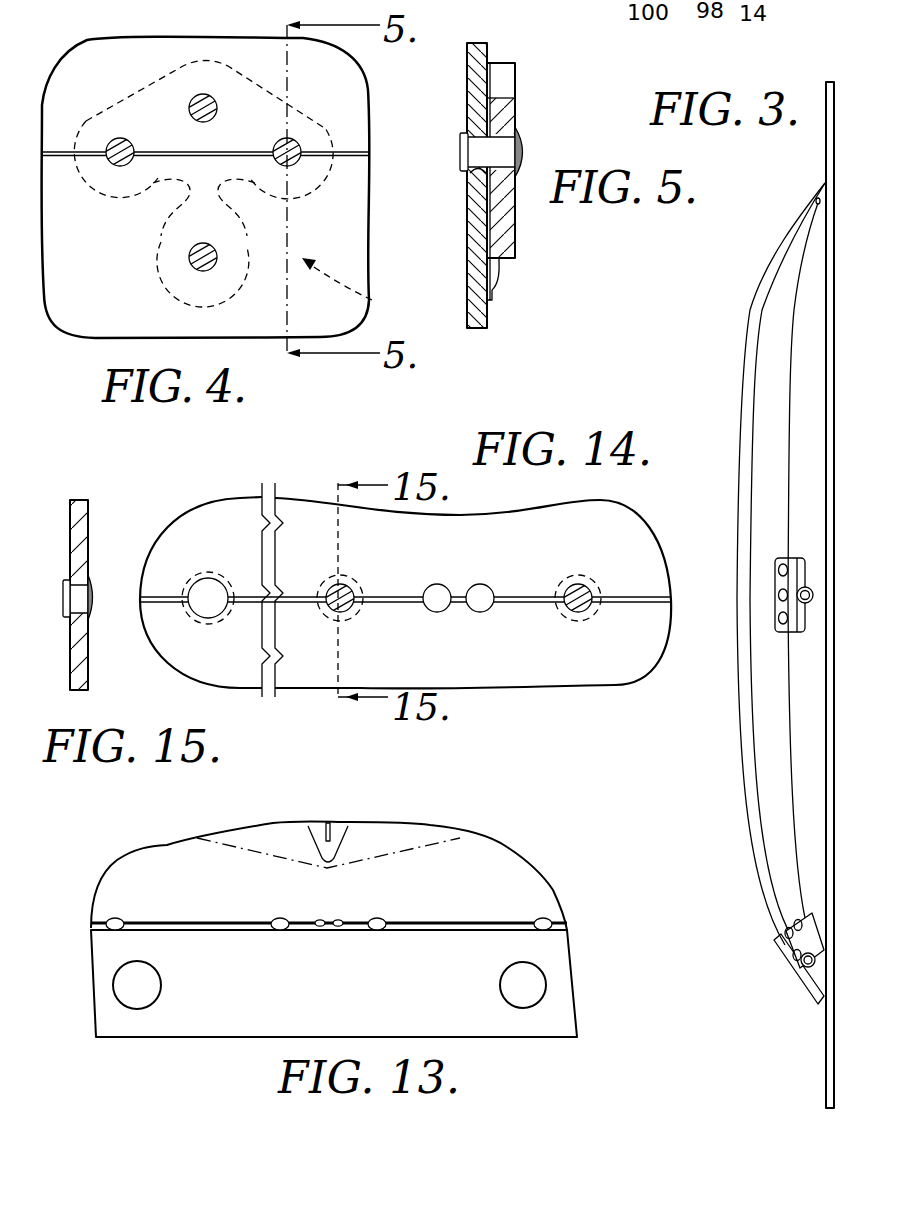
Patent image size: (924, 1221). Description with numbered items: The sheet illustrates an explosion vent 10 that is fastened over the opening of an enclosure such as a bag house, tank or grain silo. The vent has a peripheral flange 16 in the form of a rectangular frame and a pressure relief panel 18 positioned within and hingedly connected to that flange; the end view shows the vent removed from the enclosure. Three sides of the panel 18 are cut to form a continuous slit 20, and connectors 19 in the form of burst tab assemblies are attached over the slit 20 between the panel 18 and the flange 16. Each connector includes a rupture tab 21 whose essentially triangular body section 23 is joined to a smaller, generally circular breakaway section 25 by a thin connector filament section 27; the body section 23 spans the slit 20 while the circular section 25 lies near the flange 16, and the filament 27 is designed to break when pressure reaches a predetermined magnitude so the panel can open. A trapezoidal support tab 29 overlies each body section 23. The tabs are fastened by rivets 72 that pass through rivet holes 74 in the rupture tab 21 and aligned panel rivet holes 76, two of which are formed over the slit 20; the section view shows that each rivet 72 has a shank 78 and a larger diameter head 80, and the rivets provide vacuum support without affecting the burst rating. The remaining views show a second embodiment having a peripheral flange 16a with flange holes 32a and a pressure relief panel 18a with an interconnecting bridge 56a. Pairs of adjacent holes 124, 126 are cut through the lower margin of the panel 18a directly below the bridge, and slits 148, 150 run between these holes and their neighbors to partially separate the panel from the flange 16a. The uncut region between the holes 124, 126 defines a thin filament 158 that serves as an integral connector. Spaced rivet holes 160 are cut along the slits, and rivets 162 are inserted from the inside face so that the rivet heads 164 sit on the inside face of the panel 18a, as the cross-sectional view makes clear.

In FIG. 3, the explosion vent 10 is at (750, 296).
In FIG. 4, the peripheral flange 16 is at (88, 323).
In FIG. 3, the peripheral flange 16 is at (828, 142).
In FIG. 4, the pressure relief panel 18 is at (175, 40).
In FIG. 3, the pressure relief panel 18 is at (797, 232).
In FIG. 4, the connectors 19 is at (368, 301).
In FIG. 5, the connectors 19 is at (524, 65).
In FIG. 3, the connectors 19 is at (810, 552).
In FIG. 4, the slit 20 is at (346, 157).
In FIG. 3, the slit 20 is at (792, 374).
In FIG. 4, the rupture tab 21 is at (350, 72).
In FIG. 5, the rupture tab 21 is at (487, 75).
In FIG. 3, the rupture tab 21 is at (812, 602).
In FIG. 4, the triangular body section 23 is at (157, 80).
In FIG. 5, the triangular body section 23 is at (500, 98).
In FIG. 4, the circular breakaway section 25 is at (160, 277).
In FIG. 5, the circular breakaway section 25 is at (494, 295).
In FIG. 4, the connector filament section 27 is at (187, 210).
In FIG. 5, the connector filament section 27 is at (487, 218).
In FIG. 5, the support tab 29 is at (510, 223).
In FIG. 3, the support tab 29 is at (785, 633).
In FIG. 4, the rivets 72 is at (190, 108).
In FIG. 5, the rivets 72 is at (525, 135).
In FIG. 3, the rivets 72 is at (779, 596).
In FIG. 5, the rivet holes 74 is at (472, 186).
In FIG. 4, the panel rivet holes 76 is at (278, 141).
In FIG. 5, the panel rivet holes 76 is at (462, 140).
In FIG. 5, the shank 78 is at (478, 153).
In FIG. 5, the head 80 is at (525, 152).
In FIG. 14, the peripheral flange 16a is at (560, 688).
In FIG. 13, the peripheral flange 16a is at (490, 1038).
In FIG. 14, the pressure relief panel 18a is at (570, 520).
In FIG. 15, the pressure relief panel 18a is at (88, 506).
In FIG. 13, the pressure relief panel 18a is at (500, 858).
In FIG. 13, the flange holes 32a is at (150, 992).
In FIG. 13, the bridge 56a is at (330, 822).
In FIG. 14, the hole 124 is at (437, 612).
In FIG. 13, the hole 124 is at (320, 929).
In FIG. 14, the hole 126 is at (478, 584).
In FIG. 13, the hole 126 is at (340, 929).
In FIG. 14, the slit 148 is at (388, 597).
In FIG. 14, the slit 150 is at (520, 597).
In FIG. 14, the filaments 158 is at (459, 612).
In FIG. 13, the filaments 158 is at (329, 918).
In FIG. 14, the rivet holes 160 is at (328, 585).
In FIG. 15, the rivet holes 160 is at (78, 628).
In FIG. 13, the rivet holes 160 is at (108, 917).
In FIG. 14, the rivets 162 is at (210, 600).
In FIG. 15, the rivets 162 is at (63, 597).
In FIG. 15, the rivet heads 164 is at (94, 585).